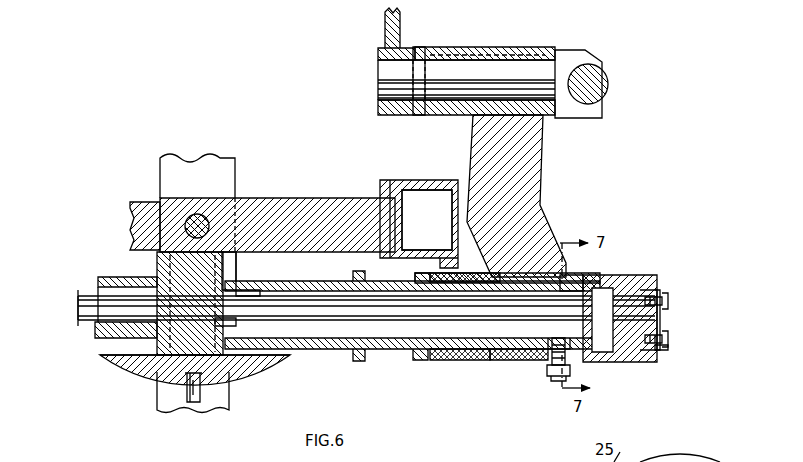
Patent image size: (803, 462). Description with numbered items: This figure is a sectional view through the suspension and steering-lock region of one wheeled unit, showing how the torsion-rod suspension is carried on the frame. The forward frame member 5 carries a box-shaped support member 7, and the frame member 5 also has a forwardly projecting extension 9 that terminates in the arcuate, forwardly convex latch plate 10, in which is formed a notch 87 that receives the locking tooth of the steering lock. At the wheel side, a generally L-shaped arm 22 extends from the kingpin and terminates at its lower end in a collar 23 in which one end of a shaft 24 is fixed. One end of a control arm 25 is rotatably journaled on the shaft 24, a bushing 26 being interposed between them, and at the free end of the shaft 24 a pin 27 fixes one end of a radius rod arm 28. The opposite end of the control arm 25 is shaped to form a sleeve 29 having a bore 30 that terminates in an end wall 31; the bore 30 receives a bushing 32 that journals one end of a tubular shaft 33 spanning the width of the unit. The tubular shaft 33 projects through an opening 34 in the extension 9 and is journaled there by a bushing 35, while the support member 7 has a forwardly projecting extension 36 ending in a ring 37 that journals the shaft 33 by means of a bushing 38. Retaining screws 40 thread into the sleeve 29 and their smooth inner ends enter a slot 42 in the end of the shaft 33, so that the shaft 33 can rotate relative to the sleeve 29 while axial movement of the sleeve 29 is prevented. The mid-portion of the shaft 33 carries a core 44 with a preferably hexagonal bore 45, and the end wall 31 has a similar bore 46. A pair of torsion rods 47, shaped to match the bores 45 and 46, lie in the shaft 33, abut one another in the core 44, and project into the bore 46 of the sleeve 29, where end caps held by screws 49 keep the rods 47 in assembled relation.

The forward frame member 5 is at (268, 210).
The box-shaped support member 7 is at (408, 188).
The forwardly projecting extension 9 is at (160, 260).
The arcuate latch plate 10 is at (255, 364).
The L-shaped arm 22 is at (608, 82).
The collar 23 is at (587, 58).
The shaft 24 is at (378, 84).
The control arm 25 is at (541, 160).
The bushing 26 is at (495, 47).
The pin 27 is at (427, 48).
The radius rod arm 28 is at (385, 28).
The sleeve 29 is at (588, 280).
The bore 30 is at (598, 346).
The end wall 31 is at (642, 360).
The bushing 32 is at (518, 362).
The tubular shaft 33 is at (332, 352).
The opening 34 is at (238, 290).
The bushing 35 is at (160, 364).
The forwardly projecting extension 36 is at (445, 257).
The ring 37 is at (430, 362).
The bushing 38 is at (466, 362).
The retaining screw 40 is at (556, 378).
The slot 42 is at (556, 350).
The core 44 is at (226, 329).
The hexagonal bore 45 is at (258, 292).
The bore 46 is at (660, 300).
The torsion rod 47 is at (78, 302).
The screw 49 is at (666, 341).
The notch 87 is at (186, 386).